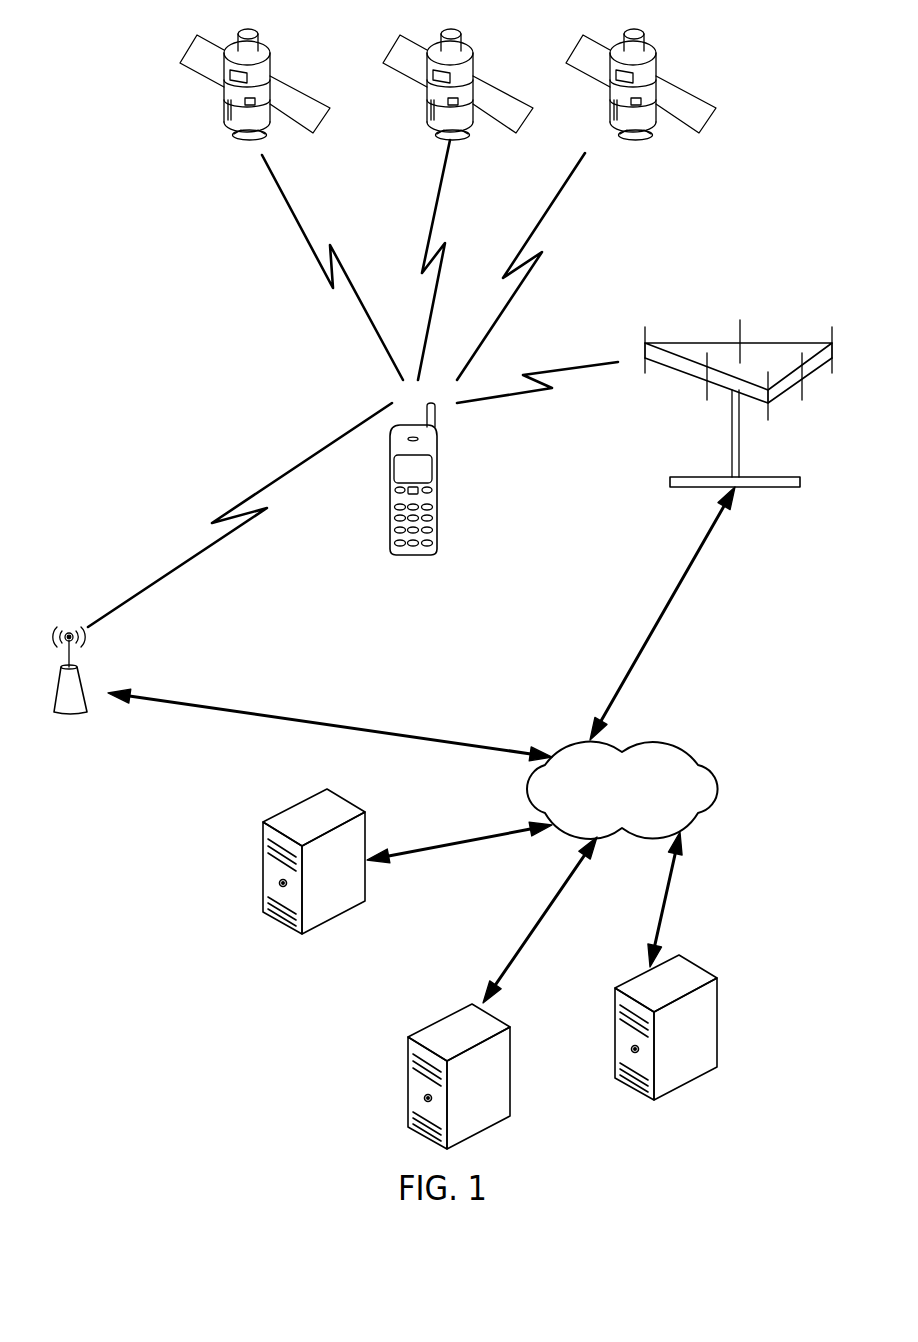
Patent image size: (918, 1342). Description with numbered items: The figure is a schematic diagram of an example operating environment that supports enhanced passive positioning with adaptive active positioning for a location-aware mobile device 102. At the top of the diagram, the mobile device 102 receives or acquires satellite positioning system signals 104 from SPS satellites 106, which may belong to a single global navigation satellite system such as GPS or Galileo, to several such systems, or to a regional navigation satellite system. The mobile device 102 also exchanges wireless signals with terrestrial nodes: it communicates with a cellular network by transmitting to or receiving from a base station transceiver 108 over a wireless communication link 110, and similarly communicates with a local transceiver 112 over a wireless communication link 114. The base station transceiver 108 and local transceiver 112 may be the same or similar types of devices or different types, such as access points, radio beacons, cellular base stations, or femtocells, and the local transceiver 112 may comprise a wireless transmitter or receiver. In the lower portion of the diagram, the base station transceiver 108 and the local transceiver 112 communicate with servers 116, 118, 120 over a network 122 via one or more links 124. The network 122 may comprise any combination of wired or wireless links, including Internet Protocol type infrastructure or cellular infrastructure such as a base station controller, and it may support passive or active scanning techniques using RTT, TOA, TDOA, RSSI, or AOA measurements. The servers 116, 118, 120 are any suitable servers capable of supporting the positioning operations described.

The mobile device 102 is at (392, 488).
The satellite positioning system (SPS) signals 104 is at (293, 207).
The SPS satellites 106 is at (150, 95).
The base station transceiver 108 is at (770, 488).
The wireless communication link 110 is at (507, 395).
The local transceiver 112 is at (72, 718).
The wireless communication link 114 is at (162, 578).
The server 116 is at (343, 796).
The server 118 is at (510, 1027).
The server 120 is at (717, 978).
The network 122 is at (708, 763).
The links 124 is at (278, 722).